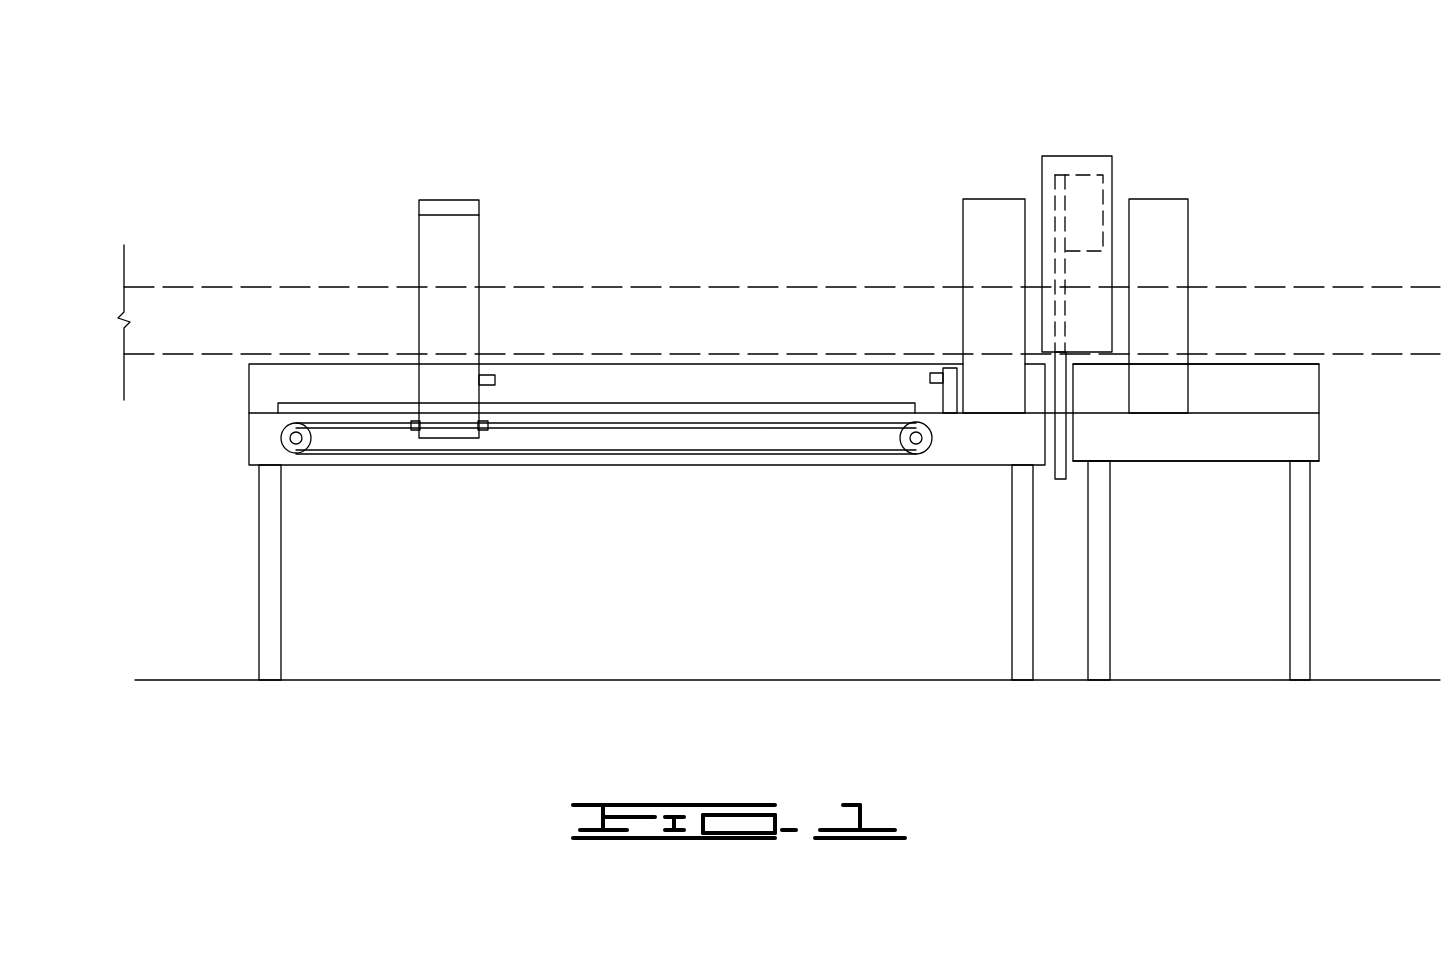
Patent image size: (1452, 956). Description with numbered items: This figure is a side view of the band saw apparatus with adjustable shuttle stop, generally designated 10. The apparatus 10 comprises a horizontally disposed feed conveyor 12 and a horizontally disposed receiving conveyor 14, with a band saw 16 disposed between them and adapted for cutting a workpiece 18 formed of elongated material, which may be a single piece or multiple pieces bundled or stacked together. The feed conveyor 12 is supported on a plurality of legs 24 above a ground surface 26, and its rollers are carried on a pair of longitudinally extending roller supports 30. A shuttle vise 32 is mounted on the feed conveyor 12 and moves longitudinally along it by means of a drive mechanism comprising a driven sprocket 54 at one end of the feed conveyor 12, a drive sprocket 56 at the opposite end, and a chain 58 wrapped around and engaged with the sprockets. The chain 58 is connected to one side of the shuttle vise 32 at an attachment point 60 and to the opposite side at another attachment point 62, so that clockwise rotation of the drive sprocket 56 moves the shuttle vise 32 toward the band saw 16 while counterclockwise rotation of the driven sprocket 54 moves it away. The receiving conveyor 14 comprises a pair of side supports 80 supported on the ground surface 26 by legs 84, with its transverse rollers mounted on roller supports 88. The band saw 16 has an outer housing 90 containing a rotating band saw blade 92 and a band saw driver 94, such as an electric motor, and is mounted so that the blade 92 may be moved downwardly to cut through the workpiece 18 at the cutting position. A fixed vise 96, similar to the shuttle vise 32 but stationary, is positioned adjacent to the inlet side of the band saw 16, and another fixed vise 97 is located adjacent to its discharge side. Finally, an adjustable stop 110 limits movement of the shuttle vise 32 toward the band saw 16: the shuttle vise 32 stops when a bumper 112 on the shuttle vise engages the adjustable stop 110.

The band saw apparatus with adjustable shuttle stop 10 is at (672, 205).
The feed conveyor 12 is at (783, 475).
The receiving conveyor 14 is at (1222, 475).
The band saw 16 is at (1053, 143).
The workpiece 18 is at (312, 287).
The legs 24 is at (268, 620).
The ground surface 26 is at (522, 680).
The roller supports 30 is at (282, 388).
The shuttle vise 32 is at (438, 192).
The driven sprocket 54 is at (283, 440).
The drive sprocket 56 is at (916, 454).
The chain 58 is at (592, 454).
The attachment point 60 is at (412, 430).
The attachment point 62 is at (488, 430).
The side supports 80 is at (1308, 440).
The legs 84 is at (1107, 640).
The roller supports 88 is at (1302, 385).
The outer housing 90 is at (1087, 155).
The band saw blade 92 is at (1043, 180).
The band saw driver 94 is at (1113, 170).
The fixed vise 96 is at (970, 238).
The fixed vise 97 is at (1178, 242).
The adjustable stop 110 is at (950, 375).
The bumper 112 is at (495, 375).